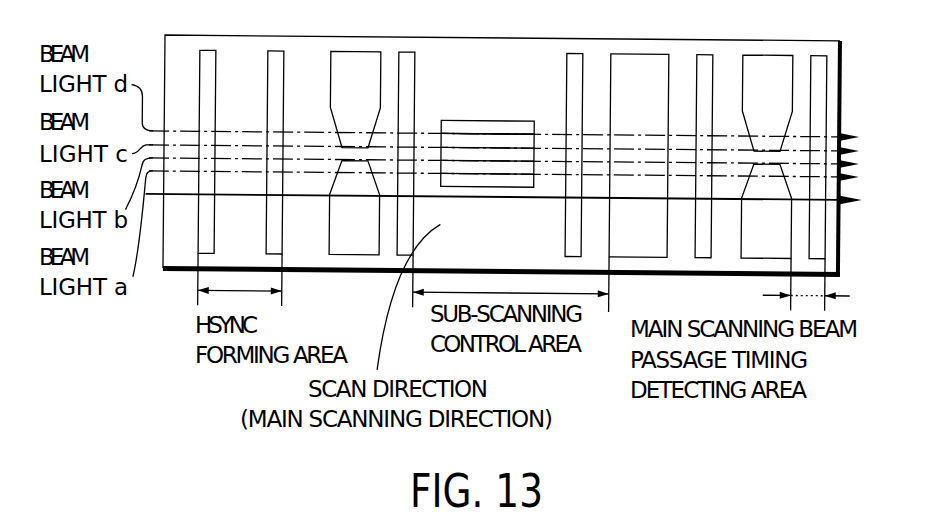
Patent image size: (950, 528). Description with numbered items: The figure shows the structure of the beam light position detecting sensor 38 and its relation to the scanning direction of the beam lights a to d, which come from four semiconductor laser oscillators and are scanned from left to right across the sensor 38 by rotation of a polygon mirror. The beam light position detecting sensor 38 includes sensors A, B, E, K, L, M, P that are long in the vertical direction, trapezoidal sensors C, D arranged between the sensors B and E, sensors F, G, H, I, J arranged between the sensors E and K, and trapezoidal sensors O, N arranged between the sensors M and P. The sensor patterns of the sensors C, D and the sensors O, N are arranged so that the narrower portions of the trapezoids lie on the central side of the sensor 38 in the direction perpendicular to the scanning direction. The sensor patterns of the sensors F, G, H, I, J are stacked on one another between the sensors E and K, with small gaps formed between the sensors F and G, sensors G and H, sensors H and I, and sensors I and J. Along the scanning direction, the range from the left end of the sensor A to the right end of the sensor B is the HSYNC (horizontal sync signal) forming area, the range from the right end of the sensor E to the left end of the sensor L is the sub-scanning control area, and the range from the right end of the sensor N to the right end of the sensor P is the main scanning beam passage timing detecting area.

The beam light position detecting sensor 38 is at (505, 49).
The sensor A is at (198, 151).
The sensor B is at (267, 152).
The trapezoidal sensor C is at (344, 207).
The trapezoidal sensor D is at (345, 99).
The sensor E is at (415, 153).
The sensor F is at (479, 183).
The sensor G is at (499, 169).
The sensor H is at (479, 153).
The sensor I is at (496, 139).
The sensor J is at (478, 149).
The sensor K is at (564, 154).
The sensor L is at (628, 156).
The sensor M is at (695, 155).
The trapezoidal sensor N is at (756, 211).
The trapezoidal sensor O is at (759, 103).
The sensor P is at (810, 157).